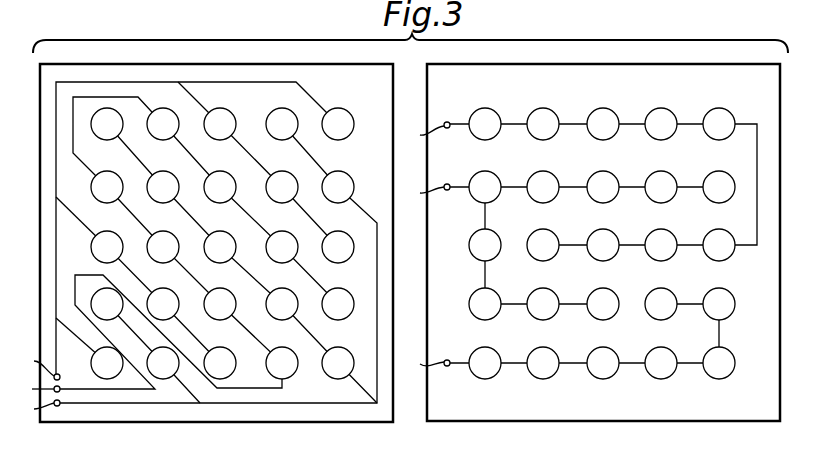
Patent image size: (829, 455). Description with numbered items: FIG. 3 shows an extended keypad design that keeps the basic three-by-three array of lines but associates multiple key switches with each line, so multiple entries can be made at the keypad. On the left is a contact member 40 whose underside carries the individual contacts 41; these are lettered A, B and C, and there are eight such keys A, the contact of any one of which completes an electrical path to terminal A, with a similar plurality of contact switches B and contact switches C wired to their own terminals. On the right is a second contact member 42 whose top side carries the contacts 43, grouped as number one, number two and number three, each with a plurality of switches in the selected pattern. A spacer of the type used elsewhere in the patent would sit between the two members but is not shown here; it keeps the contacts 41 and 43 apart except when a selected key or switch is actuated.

The contact member 40 is at (381, 136).
The individual contacts 41 is at (232, 316).
The second contact member 42 is at (536, 406).
The contacts 43 is at (615, 113).